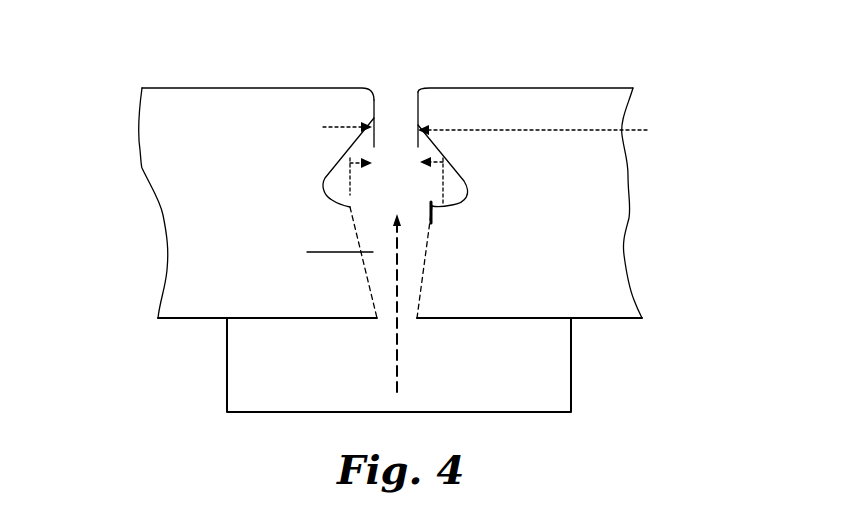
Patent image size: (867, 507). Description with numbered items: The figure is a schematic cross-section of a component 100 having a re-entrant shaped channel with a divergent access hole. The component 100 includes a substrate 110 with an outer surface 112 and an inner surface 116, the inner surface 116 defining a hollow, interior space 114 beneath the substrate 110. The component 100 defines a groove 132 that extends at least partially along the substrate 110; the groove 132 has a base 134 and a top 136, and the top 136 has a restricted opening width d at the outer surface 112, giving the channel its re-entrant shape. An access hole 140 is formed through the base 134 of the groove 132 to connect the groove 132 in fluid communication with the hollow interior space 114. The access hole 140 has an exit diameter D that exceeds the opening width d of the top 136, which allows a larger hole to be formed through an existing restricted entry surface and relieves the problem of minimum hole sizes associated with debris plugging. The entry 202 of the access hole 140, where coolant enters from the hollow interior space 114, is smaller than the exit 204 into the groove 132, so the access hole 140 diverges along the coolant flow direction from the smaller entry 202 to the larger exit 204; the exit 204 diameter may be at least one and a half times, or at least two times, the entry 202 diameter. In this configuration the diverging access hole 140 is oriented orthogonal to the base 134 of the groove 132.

The component 100 is at (90, 42).
The substrate 110 is at (185, 163).
The outer surface 112 is at (247, 88).
The hollow interior space 114 is at (346, 395).
The inner surface 116 is at (584, 320).
The groove 132 is at (440, 181).
The base 134 is at (436, 225).
The top 136 is at (415, 84).
The access hole 140 is at (307, 252).
The entry 202 is at (406, 322).
The exit 204 is at (442, 203).